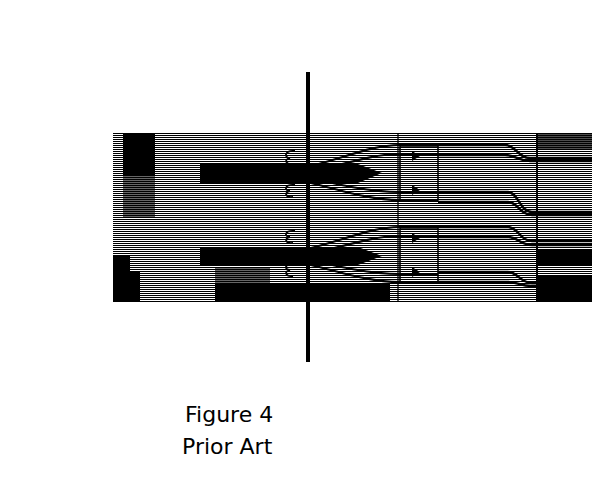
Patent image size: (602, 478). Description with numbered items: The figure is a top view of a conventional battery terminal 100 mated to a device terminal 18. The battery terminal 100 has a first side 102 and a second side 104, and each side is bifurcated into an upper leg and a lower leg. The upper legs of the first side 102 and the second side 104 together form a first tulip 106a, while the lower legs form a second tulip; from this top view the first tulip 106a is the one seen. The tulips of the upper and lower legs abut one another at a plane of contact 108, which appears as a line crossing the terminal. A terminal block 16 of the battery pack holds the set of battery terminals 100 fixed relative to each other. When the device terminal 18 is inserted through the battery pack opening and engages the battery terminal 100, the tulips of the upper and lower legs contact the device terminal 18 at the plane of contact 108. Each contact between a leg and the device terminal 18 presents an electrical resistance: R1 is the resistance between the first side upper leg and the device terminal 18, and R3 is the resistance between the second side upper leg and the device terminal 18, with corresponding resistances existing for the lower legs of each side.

The terminal block 16 is at (573, 133).
The device terminal 18 is at (230, 133).
The battery terminal 100 is at (478, 137).
The first side 102 is at (373, 140).
The second side 104 is at (437, 140).
The first tulip 106a is at (258, 303).
The plane of contact 108 is at (305, 88).
The resistance between first side upper leg and device terminal R1 is at (160, 152).
The resistance between second side upper leg and device terminal R3 is at (314, 280).